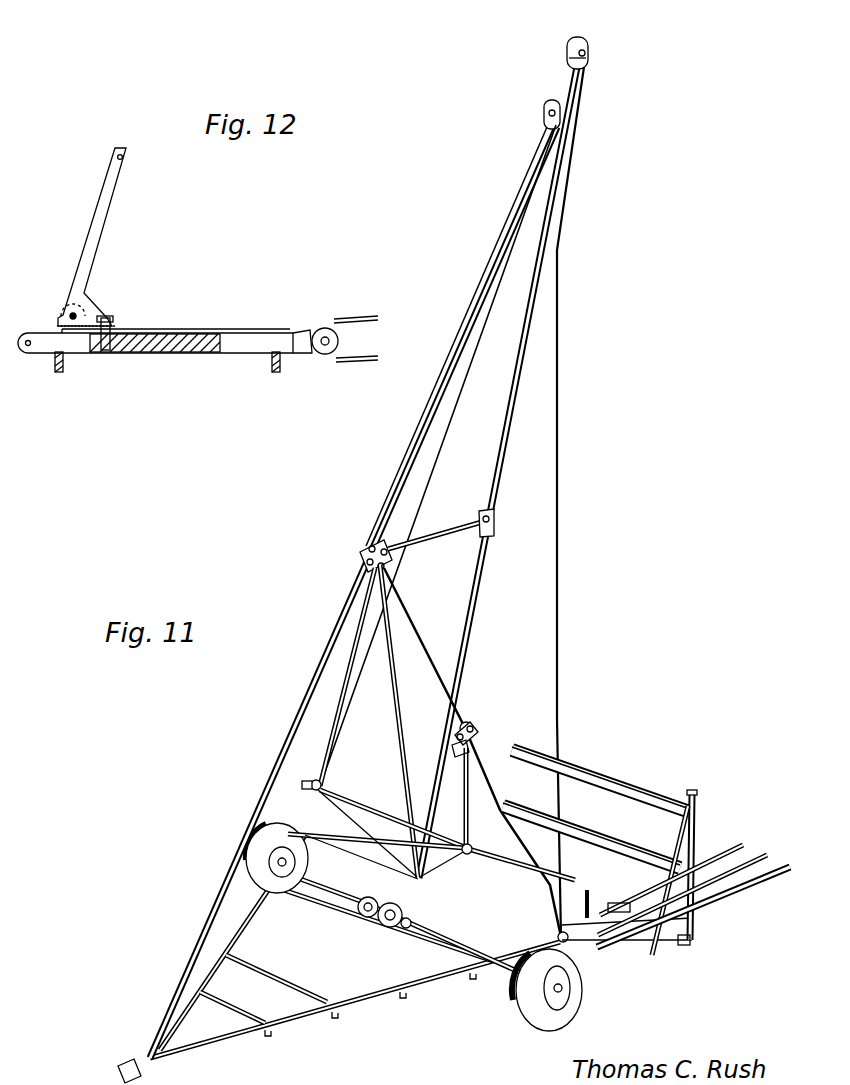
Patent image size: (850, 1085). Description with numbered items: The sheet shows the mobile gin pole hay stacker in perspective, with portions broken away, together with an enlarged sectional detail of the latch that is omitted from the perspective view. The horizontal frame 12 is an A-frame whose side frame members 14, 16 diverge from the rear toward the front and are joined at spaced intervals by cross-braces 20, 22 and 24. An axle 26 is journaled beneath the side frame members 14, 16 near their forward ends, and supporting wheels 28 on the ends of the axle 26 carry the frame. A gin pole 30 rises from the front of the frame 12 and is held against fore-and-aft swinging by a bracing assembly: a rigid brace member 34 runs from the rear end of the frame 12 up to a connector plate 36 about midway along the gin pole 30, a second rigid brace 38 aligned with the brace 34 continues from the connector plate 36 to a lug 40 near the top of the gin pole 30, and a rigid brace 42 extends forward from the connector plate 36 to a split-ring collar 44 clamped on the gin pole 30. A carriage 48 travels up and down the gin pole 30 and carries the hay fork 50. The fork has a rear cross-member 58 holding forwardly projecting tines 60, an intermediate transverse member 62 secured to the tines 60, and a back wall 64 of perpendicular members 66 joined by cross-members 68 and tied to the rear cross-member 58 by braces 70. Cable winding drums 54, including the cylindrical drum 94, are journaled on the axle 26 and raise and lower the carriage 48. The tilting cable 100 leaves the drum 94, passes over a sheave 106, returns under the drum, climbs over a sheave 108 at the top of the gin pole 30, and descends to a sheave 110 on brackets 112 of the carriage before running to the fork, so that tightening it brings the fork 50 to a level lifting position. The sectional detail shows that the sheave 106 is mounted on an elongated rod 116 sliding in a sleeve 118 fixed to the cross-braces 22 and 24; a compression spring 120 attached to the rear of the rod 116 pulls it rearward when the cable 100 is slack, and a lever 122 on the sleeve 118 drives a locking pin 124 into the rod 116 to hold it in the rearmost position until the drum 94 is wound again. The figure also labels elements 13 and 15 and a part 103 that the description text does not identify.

In FIG. 11, the frame 12 is at (386, 1003).
In FIG. 11, the cable 13 is at (446, 457).
In FIG. 11, the side frame member 14 is at (306, 1022).
In FIG. 11, the cable/strut 15 is at (445, 692).
In FIG. 11, the side frame member 16 is at (238, 922).
In FIG. 11, the cross-brace 20 is at (300, 900).
In FIG. 12, the cross-brace 22 is at (282, 365).
In FIG. 11, the cross-brace 22 is at (280, 976).
In FIG. 12, the cross-brace 24 is at (62, 368).
In FIG. 11, the cross-brace 24 is at (243, 1012).
In FIG. 11, the axle 26 is at (405, 930).
In FIG. 11, the supporting wheels 28 is at (285, 824).
In FIG. 11, the gin pole 30 is at (476, 611).
In FIG. 11, the rigid brace member 34 is at (270, 771).
In FIG. 11, the connector plate 36 is at (366, 548).
In FIG. 11, the second rigid brace 38 is at (470, 306).
In FIG. 11, the lug 40 is at (544, 111).
In FIG. 11, the rigid brace 42 is at (436, 540).
In FIG. 11, the collar 44 is at (494, 528).
In FIG. 11, the carriage 48 is at (520, 786).
In FIG. 11, the hay fork 50 is at (752, 895).
In FIG. 11, the cable winding drums 54 is at (568, 945).
In FIG. 11, the rear cross-member 58 is at (641, 955).
In FIG. 11, the tines 60 is at (752, 858).
In FIG. 11, the intermediate transverse member 62 is at (684, 946).
In FIG. 11, the back wall 64 is at (685, 788).
In FIG. 11, the perpendicular members 66 is at (698, 853).
In FIG. 11, the cross-members 68 is at (622, 777).
In FIG. 11, the braces 70 is at (678, 841).
In FIG. 11, the cylindrical drum 94 is at (368, 918).
In FIG. 12, the tilting cable 100 is at (359, 320).
In FIG. 11, the fitting 103 is at (471, 848).
In FIG. 12, the sheave 106 is at (323, 328).
In FIG. 11, the sheave 108 is at (589, 40).
In FIG. 11, the sheave 110 is at (468, 722).
In FIG. 11, the brackets 112 is at (479, 731).
In FIG. 12, the elongated rod 116 is at (306, 332).
In FIG. 12, the sleeve 118 is at (186, 333).
In FIG. 12, the compression spring 120 is at (27, 337).
In FIG. 12, the lever 122 is at (108, 198).
In FIG. 12, the locking pin 124 is at (113, 352).